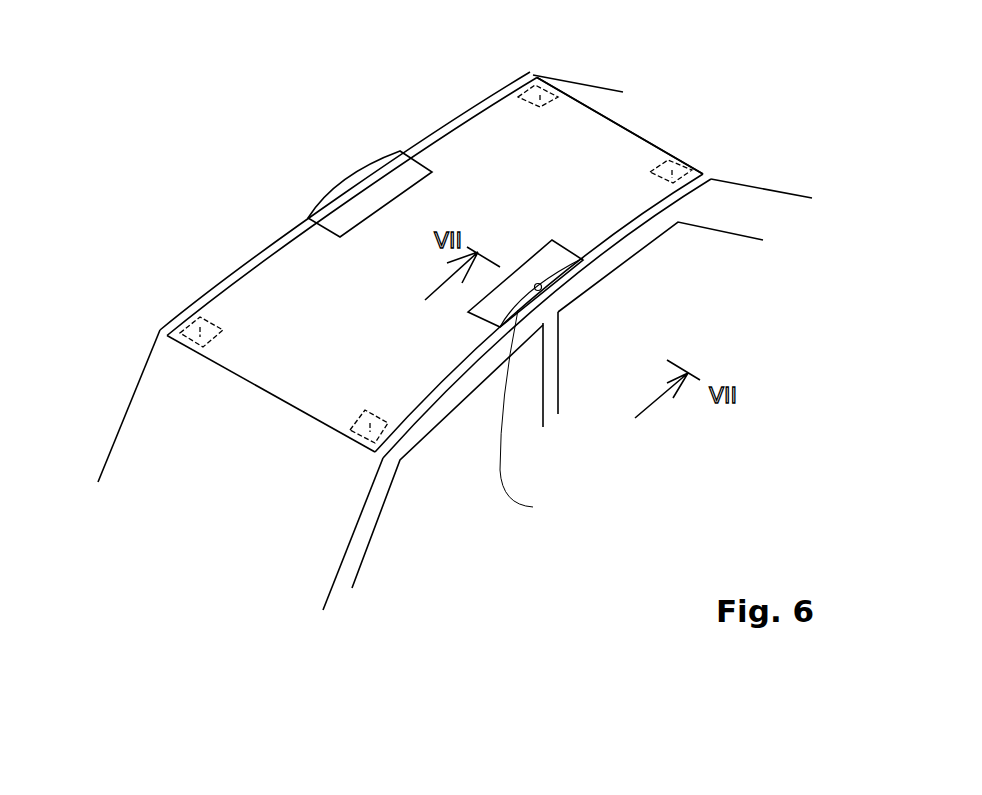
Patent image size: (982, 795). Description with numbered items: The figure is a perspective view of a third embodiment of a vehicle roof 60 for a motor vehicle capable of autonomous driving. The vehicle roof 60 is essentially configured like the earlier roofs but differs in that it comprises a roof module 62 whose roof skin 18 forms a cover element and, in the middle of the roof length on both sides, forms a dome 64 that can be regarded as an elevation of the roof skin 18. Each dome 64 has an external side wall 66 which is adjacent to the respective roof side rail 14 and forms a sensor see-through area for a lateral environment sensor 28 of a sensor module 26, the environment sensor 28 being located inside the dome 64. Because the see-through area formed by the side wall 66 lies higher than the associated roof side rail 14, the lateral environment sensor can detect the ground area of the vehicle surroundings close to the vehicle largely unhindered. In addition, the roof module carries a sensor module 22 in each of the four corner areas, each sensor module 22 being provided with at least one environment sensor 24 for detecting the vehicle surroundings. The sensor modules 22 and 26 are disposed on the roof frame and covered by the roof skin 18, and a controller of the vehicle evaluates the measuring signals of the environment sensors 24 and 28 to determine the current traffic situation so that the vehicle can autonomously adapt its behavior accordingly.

The roof side rail 14 is at (237, 265).
The roof skin 18 is at (337, 327).
The sensor module 22 is at (460, 321).
The environment sensor 24 is at (540, 97).
The sensor module 26 is at (659, 304).
The environment sensor 28 is at (545, 290).
The vehicle roof 60 is at (435, 118).
The roof module 62 is at (633, 115).
The dome 64 is at (358, 197).
The external side wall 66 is at (534, 416).